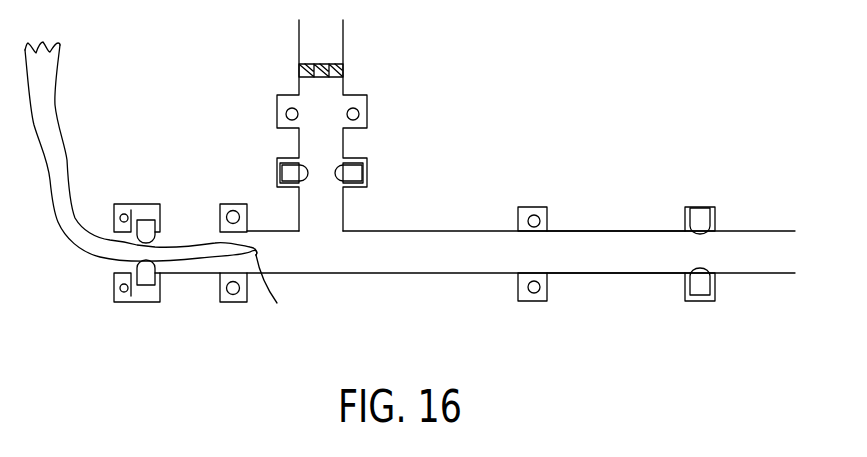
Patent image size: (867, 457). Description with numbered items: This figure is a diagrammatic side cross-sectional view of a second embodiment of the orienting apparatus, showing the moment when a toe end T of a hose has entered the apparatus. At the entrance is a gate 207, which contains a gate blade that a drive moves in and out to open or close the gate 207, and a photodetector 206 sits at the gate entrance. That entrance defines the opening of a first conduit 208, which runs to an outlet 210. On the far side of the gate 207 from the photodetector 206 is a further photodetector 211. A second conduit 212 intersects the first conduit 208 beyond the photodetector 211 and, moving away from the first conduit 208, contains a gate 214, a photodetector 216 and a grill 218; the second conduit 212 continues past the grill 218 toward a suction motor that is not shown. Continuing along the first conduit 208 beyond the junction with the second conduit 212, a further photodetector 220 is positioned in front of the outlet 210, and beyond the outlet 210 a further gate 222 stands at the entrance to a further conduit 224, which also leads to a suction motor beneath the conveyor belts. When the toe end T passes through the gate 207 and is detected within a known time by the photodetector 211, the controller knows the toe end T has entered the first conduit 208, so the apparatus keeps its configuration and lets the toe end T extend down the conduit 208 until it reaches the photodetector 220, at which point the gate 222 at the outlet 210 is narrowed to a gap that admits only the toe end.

The photodetector 206 is at (120, 203).
The gate 207 is at (147, 204).
The first conduit 208 is at (368, 282).
The outlet 210 is at (672, 262).
The further photodetector 211 is at (237, 204).
The second conduit 212 is at (372, 142).
The gate 214 is at (367, 175).
The photodetector 216 is at (367, 107).
The grill 218 is at (342, 70).
The further photodetector 220 is at (535, 207).
The further gate 222 is at (700, 207).
The further conduit 224 is at (772, 228).
The toe end T is at (159, 182).